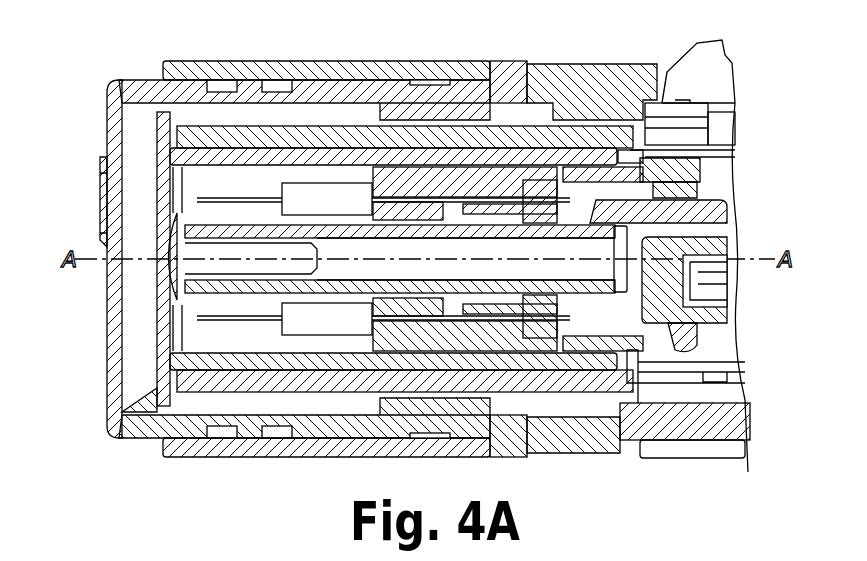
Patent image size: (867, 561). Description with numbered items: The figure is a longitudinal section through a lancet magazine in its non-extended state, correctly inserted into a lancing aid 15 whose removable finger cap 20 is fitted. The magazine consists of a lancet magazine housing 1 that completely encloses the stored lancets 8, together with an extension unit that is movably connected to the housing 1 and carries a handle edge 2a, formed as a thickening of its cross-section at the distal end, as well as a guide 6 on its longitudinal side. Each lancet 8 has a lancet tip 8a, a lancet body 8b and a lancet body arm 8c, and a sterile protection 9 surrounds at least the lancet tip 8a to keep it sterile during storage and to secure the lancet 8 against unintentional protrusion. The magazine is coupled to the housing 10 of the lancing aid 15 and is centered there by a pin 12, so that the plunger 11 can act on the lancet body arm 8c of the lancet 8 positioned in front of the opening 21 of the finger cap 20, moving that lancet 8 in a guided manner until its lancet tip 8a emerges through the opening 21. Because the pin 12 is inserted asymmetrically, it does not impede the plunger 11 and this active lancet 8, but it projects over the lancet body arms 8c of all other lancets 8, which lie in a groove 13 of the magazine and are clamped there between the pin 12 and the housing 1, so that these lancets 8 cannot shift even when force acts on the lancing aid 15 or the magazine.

The lancet magazine housing 1 is at (110, 412).
The handle edge 2a is at (160, 400).
The guide 6 is at (402, 383).
The lancet 8 is at (200, 202).
The lancet tip 8a is at (197, 316).
The lancet body 8b is at (490, 75).
The lancet body arm 8c is at (687, 172).
The sterile protection 9 is at (340, 190).
The housing of the lancing aid 10 is at (712, 63).
The plunger 11 is at (723, 213).
The pin 12 is at (705, 325).
The groove 13 is at (650, 157).
The lancing aid 15 is at (693, 44).
The finger cap 20 is at (137, 80).
The opening of the finger cap 21 is at (112, 198).